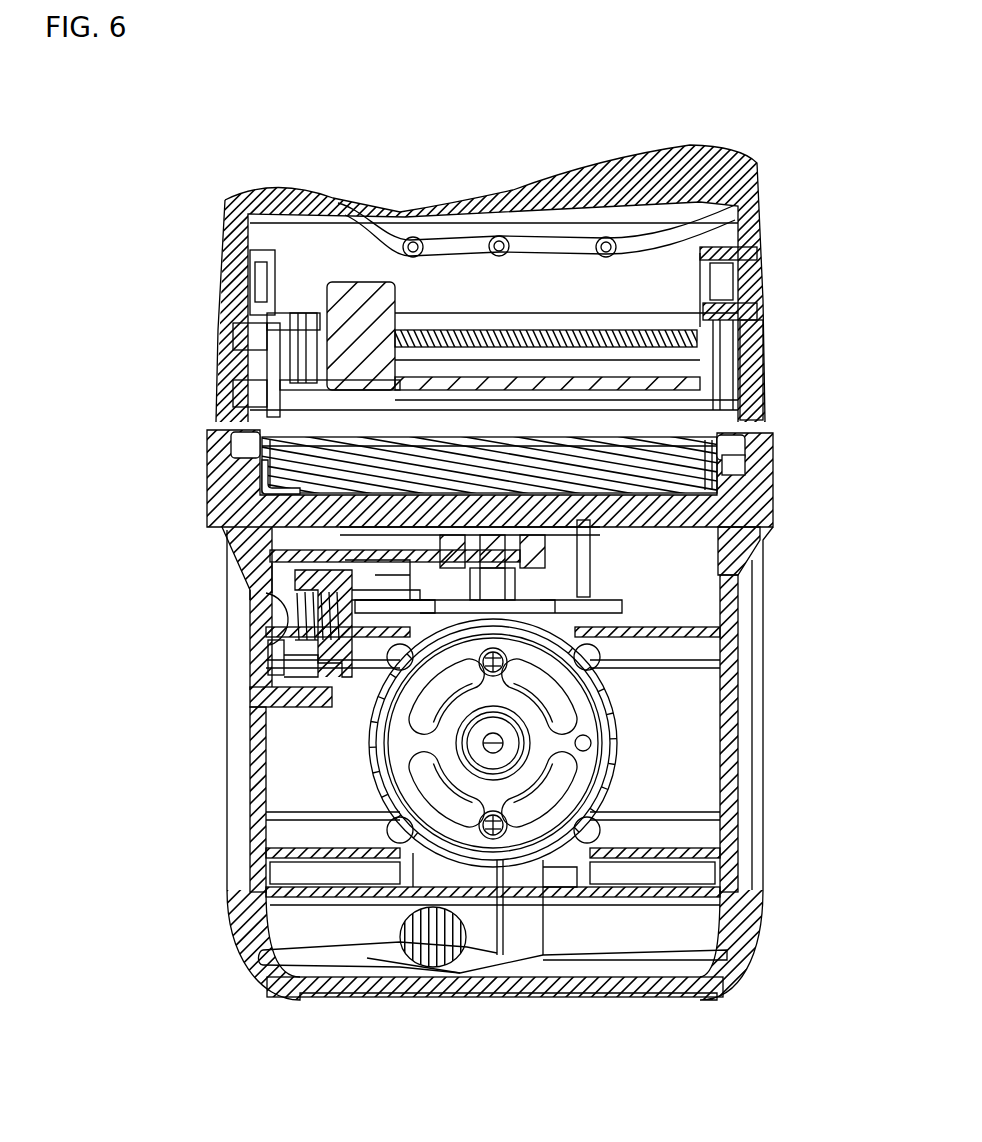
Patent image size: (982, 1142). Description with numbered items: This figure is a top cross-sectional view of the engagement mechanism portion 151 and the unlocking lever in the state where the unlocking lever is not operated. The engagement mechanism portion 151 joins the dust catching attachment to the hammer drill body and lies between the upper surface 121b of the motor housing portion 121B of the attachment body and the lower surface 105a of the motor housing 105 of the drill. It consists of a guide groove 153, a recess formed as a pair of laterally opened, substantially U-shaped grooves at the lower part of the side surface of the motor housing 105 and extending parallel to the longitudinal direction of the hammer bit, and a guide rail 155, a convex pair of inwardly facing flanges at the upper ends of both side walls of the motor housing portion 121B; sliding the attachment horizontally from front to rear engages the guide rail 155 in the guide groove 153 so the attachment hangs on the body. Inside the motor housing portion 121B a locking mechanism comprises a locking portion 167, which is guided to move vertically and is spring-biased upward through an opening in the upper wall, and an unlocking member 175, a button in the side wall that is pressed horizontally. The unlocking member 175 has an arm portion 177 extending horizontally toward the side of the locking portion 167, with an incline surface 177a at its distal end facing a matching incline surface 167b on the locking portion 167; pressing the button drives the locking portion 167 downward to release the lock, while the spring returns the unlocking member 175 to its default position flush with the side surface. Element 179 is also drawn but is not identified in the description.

The motor housing 105 is at (222, 273).
The lower surface of the motor housing 105a is at (405, 490).
The upper surface of the motor housing portion 121b is at (600, 490).
The engagement mechanism portion 151 is at (205, 458).
The guide groove 153 is at (222, 428).
The guide rail 155 is at (246, 455).
The locking portion 167 is at (590, 544).
The incline surface of the locking portion 167b is at (287, 600).
The unlocking member 175 is at (258, 628).
The arm portion 177 is at (287, 590).
The incline surface of the arm portion 177a is at (238, 545).
The stopper block 179 is at (255, 675).
The motor housing portion 121B is at (740, 712).